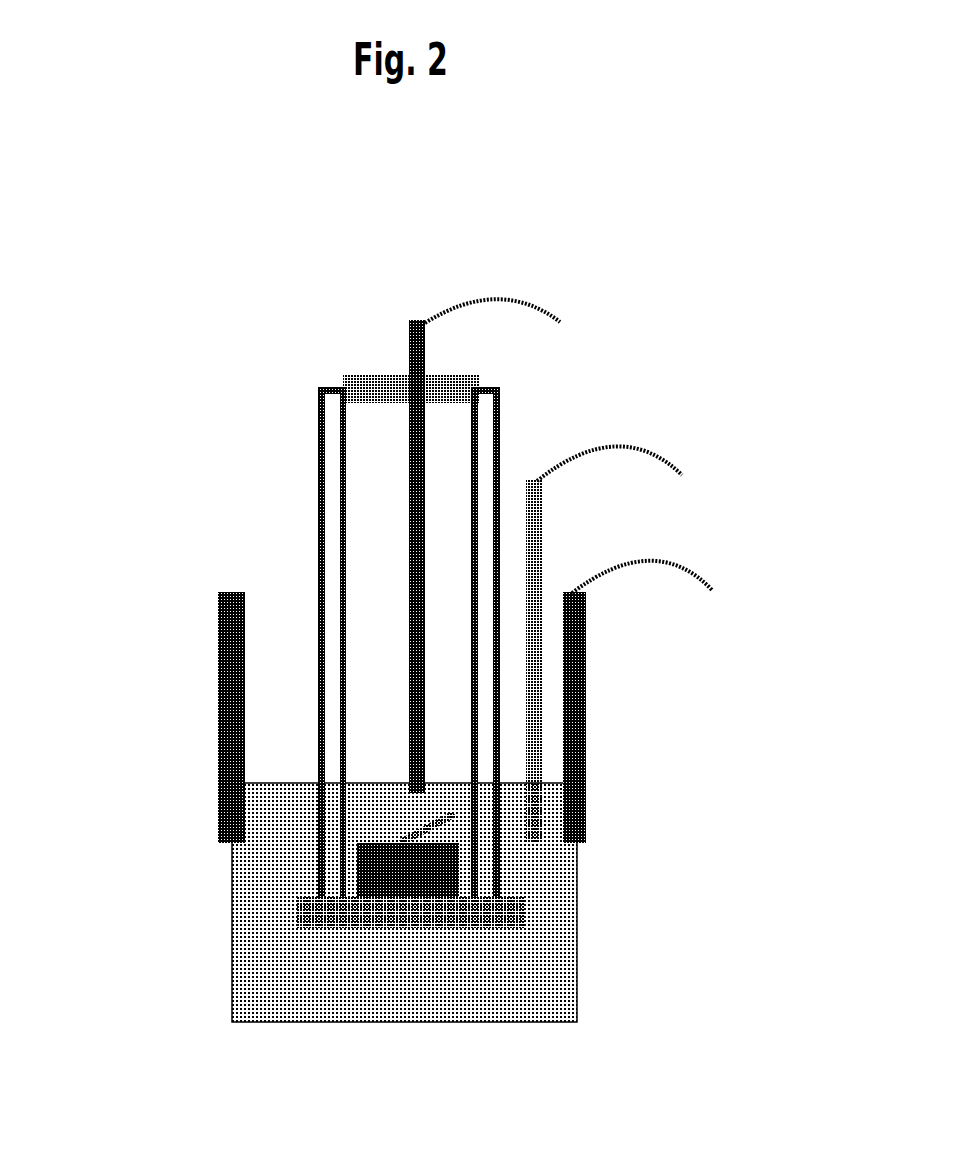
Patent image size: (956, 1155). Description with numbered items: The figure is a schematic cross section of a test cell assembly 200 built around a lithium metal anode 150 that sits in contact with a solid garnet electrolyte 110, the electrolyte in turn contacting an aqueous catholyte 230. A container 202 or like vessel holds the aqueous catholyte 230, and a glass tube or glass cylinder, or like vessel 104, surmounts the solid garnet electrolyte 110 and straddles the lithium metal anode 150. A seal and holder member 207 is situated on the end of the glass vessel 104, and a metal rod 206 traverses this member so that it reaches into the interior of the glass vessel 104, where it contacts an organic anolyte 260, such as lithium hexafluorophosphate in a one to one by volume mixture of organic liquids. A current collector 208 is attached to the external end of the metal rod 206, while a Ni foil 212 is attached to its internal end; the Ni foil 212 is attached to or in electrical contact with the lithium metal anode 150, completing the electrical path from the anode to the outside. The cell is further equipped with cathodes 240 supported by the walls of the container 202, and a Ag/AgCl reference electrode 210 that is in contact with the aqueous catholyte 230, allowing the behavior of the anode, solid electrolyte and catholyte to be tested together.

The test cell assembly 200 is at (396, 244).
The container 202 is at (231, 996).
The metal rod 206 is at (426, 356).
The seal and holder member 207 is at (357, 371).
The current collector 208 is at (565, 322).
The glass vessel 104 is at (500, 408).
The Ag/AgCl reference electrode 210 is at (547, 525).
The Ni foil 212 is at (383, 812).
The aqueous catholyte 230 is at (532, 989).
The cathodes 240 is at (212, 601).
The organic anolyte 260 is at (450, 800).
The lithium metal anode 150 is at (459, 872).
The solid garnet electrolyte 110 is at (527, 913).